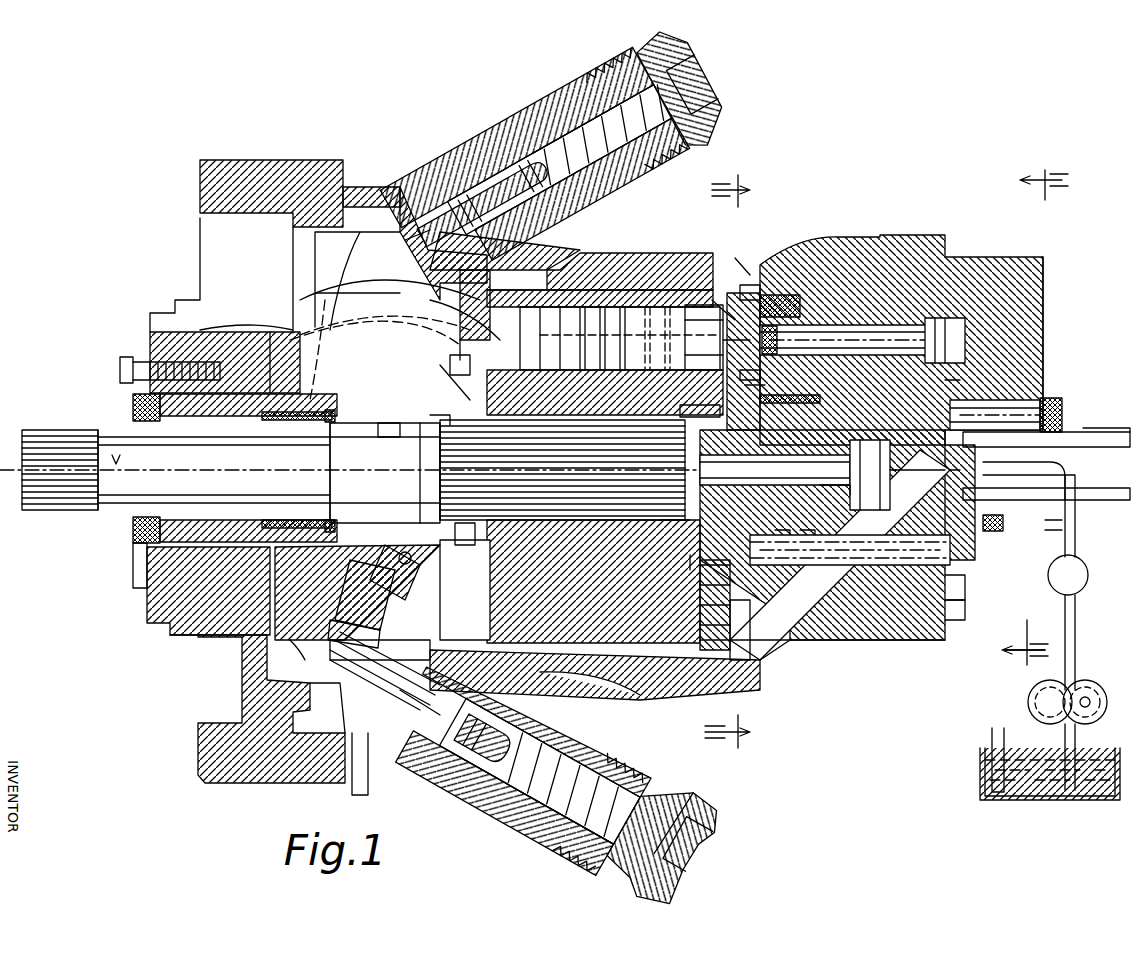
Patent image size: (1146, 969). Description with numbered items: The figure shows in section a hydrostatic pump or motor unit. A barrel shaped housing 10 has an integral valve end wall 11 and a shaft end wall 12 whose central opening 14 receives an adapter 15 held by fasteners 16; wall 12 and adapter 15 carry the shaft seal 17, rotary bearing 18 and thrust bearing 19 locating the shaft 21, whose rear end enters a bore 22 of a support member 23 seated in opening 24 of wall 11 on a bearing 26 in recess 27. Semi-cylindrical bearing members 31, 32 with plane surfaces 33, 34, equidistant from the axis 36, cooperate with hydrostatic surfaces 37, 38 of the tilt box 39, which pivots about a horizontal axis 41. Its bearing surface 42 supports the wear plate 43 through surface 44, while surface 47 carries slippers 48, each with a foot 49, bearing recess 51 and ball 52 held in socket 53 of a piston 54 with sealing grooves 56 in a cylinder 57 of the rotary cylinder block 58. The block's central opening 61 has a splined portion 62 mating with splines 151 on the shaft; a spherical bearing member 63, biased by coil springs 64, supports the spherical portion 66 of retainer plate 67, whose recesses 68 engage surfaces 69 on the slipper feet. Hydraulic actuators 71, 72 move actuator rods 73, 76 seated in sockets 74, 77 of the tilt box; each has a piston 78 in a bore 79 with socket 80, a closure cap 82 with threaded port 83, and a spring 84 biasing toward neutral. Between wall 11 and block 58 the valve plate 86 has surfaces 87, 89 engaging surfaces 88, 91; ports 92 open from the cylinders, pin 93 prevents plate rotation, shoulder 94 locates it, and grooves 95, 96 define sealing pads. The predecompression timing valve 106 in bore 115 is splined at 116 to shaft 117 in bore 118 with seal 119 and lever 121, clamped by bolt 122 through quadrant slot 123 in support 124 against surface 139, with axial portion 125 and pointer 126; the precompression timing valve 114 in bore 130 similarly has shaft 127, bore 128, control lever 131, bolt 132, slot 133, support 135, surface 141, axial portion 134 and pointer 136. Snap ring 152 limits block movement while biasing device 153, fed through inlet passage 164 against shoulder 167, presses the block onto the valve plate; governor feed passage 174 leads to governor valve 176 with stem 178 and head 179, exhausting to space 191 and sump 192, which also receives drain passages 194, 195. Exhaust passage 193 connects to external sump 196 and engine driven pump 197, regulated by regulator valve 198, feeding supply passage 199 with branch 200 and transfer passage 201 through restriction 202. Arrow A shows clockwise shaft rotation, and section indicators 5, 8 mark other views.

The barrel shaped housing 10 is at (660, 265).
The valve supporting end wall 11 is at (840, 265).
The shaft end support wall 12 is at (205, 185).
The central opening 14 is at (112, 430).
The adapter 15 is at (193, 410).
The fasteners 16 is at (125, 372).
The shaft seal 17 is at (150, 425).
The rotary bearing 18 is at (275, 420).
The thrust bearing 19 is at (328, 412).
The shaft 21 is at (118, 512).
The bore 22 is at (815, 490).
The cylindrical support member 23 is at (780, 540).
The opening 24 is at (805, 540).
The bearing 26 is at (775, 468).
The recess 27 is at (808, 460).
The semi-cylindrical bearing member 31 is at (325, 305).
The semi-cylindrical bearing member 32 is at (350, 688).
The plane semi-cylindrical bearing surface 33 is at (405, 316).
The plane semi-cylindrical bearing surface 34 is at (425, 632).
The axis 36 is at (345, 485).
The hydrostatic bearing surface 37 is at (410, 298).
The hydrostatic bearing surface 38 is at (322, 576).
The tilt box 39 is at (275, 592).
The horizontal axis 41 is at (440, 470).
The flat annular bearing surface 42 is at (385, 600).
The wear plate 43 is at (358, 615).
The annular bearing surface 44 is at (340, 655).
The annular bearing surface 47 is at (395, 580).
The slippers 48 is at (495, 372).
The foot portion 49 is at (470, 265).
The hydrostatic bearing recess 51 is at (460, 350).
The ball portion 52 is at (563, 305).
The socket 53 is at (588, 305).
The piston 54 is at (604, 368).
The sealing grooves 56 is at (648, 368).
The cylinder 57 is at (605, 305).
The rotary cylinder block 58 is at (630, 305).
The central opening 61 is at (602, 535).
The splined portion 62 is at (455, 610).
The spherical bearing member 63 is at (380, 428).
The coil springs 64 is at (468, 545).
The spherical bearing portion 66 is at (445, 376).
The retainer plate 67 is at (410, 560).
The recess 68 is at (455, 366).
The annular surface 69 is at (458, 300).
The hydraulic actuator 71 is at (446, 116).
The hydraulic actuator 72 is at (504, 838).
The top actuator rod 73 is at (425, 200).
The socket 74 is at (405, 275).
The actuator rod 76 is at (368, 672).
The socket 77 is at (300, 645).
The piston 78 is at (486, 180).
The bore 79 is at (442, 195).
The socket 80 is at (470, 185).
The end closure cap 82 is at (722, 129).
The threaded port 83 is at (710, 92).
The spring 84 is at (642, 152).
The valve plate 86 is at (750, 290).
The bearing and sealing surface 87 is at (762, 386).
The bearing and sealing surface 88 is at (760, 400).
The bearing and sealing surface 89 is at (760, 375).
The bearing and sealing surface 91 is at (742, 380).
The port 92 is at (718, 330).
The pin 93 is at (770, 290).
The shoulder 94 is at (740, 270).
The radially inner annular groove 95 is at (708, 570).
The radially outer annular groove 96 is at (742, 660).
The rotary predecompression timing valve 106 is at (720, 303).
The precompression timing valve 114 is at (710, 585).
The bore 115 is at (770, 330).
The splines 116 is at (722, 356).
The shaft 117 is at (828, 335).
The bore 118 is at (860, 333).
The seal 119 is at (935, 325).
The lever 121 is at (960, 395).
The bolt 122 is at (1050, 412).
The quadrant slot 123 is at (1020, 405).
The support 124 is at (1043, 330).
The axial portion 125 is at (1075, 436).
The pointer 126 is at (1122, 428).
The shaft 127 is at (872, 620).
The bore 128 is at (862, 560).
The bore 130 is at (722, 650).
The control lever 131 is at (958, 612).
The securing bolt 132 is at (1000, 524).
The quadrant slot 133 is at (975, 560).
The axial portion 134 is at (1090, 496).
The support 135 is at (1026, 628).
The pointer 136 is at (1102, 612).
The surface 139 is at (950, 380).
The surface 141 is at (960, 588).
The splines 151 is at (560, 522).
The snap ring 152 is at (440, 430).
The biasing device 153 is at (680, 410).
The inlet passage 164 is at (710, 470).
The shoulder 167 is at (665, 522).
The governor feed passage 174 is at (692, 560).
The governor valve 176 is at (665, 678).
The stem 178 is at (710, 600).
The head portion 179 is at (712, 615).
The space 191 is at (765, 650).
The sump 192 is at (282, 735).
The exhaust passage 193 is at (368, 785).
The drain passage 194 is at (825, 618).
The drain passage 195 is at (938, 548).
The external sump 196 is at (1065, 798).
The engine driven pump 197 is at (1088, 690).
The regulator valve 198 is at (1082, 588).
The supply passage 199 is at (1078, 512).
The branch 200 is at (1055, 532).
The transfer passage 201 is at (850, 455).
The restriction 202 is at (835, 485).
The section line 5 is at (1029, 194).
The section line 8 is at (741, 203).
The arrow A is at (116, 462).